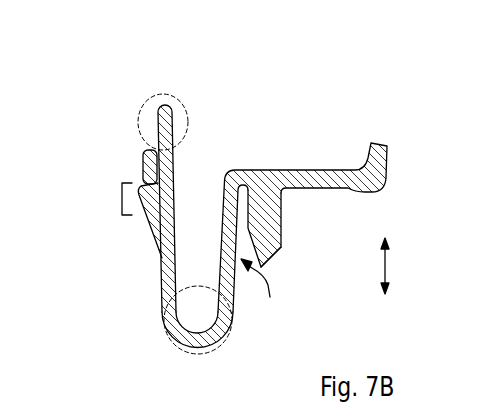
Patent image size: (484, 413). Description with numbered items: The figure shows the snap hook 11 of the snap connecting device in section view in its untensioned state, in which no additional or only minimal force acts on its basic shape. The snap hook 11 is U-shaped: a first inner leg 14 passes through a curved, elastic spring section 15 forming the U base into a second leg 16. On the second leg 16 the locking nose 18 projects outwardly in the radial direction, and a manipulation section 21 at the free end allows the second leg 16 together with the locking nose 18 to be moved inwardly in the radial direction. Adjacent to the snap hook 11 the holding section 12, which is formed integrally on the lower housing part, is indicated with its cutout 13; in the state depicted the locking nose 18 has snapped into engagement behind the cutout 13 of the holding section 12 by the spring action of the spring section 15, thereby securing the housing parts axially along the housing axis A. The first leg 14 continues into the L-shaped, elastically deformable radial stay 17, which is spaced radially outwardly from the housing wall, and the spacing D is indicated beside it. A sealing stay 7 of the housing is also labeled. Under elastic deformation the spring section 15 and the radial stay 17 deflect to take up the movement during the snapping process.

The snap hook 11 is at (84, 113).
The manipulation section 21 is at (158, 97).
The holding section 12 is at (145, 152).
The cutout 13 is at (122, 203).
The locking nose 18 is at (150, 207).
The second leg 16 is at (161, 262).
The spring section 15 is at (230, 338).
The radial stay 17 is at (226, 165).
The first leg 14 is at (282, 211).
The sealing stay 7 is at (268, 240).
The spacing D is at (259, 288).
The housing axis A is at (392, 266).